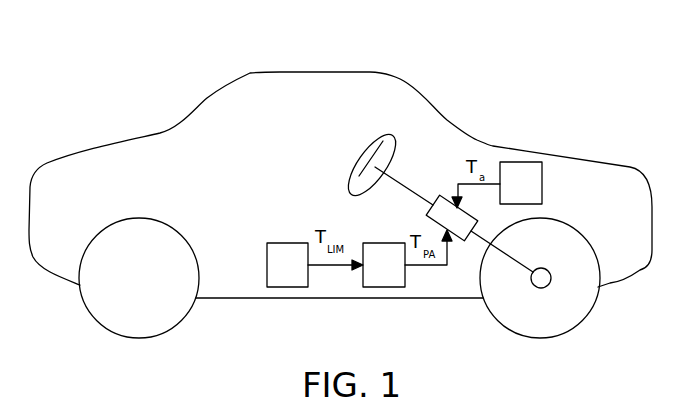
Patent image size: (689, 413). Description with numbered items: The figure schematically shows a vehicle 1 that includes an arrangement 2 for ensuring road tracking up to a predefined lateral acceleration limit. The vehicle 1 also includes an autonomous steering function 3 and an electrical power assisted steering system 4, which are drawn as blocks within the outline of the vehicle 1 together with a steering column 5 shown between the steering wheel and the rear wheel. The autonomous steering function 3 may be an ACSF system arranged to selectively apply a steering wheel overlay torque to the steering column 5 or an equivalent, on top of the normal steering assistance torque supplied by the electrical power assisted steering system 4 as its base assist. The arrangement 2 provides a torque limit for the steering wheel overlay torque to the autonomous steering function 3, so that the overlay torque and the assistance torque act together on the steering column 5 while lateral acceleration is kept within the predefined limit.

The vehicle 1 is at (412, 60).
The arrangement for ensuring road tracking 2 is at (294, 276).
The autonomous steering function 3 is at (391, 276).
The electrical power assisted steering system 4 is at (528, 194).
The steering column 5 is at (415, 193).